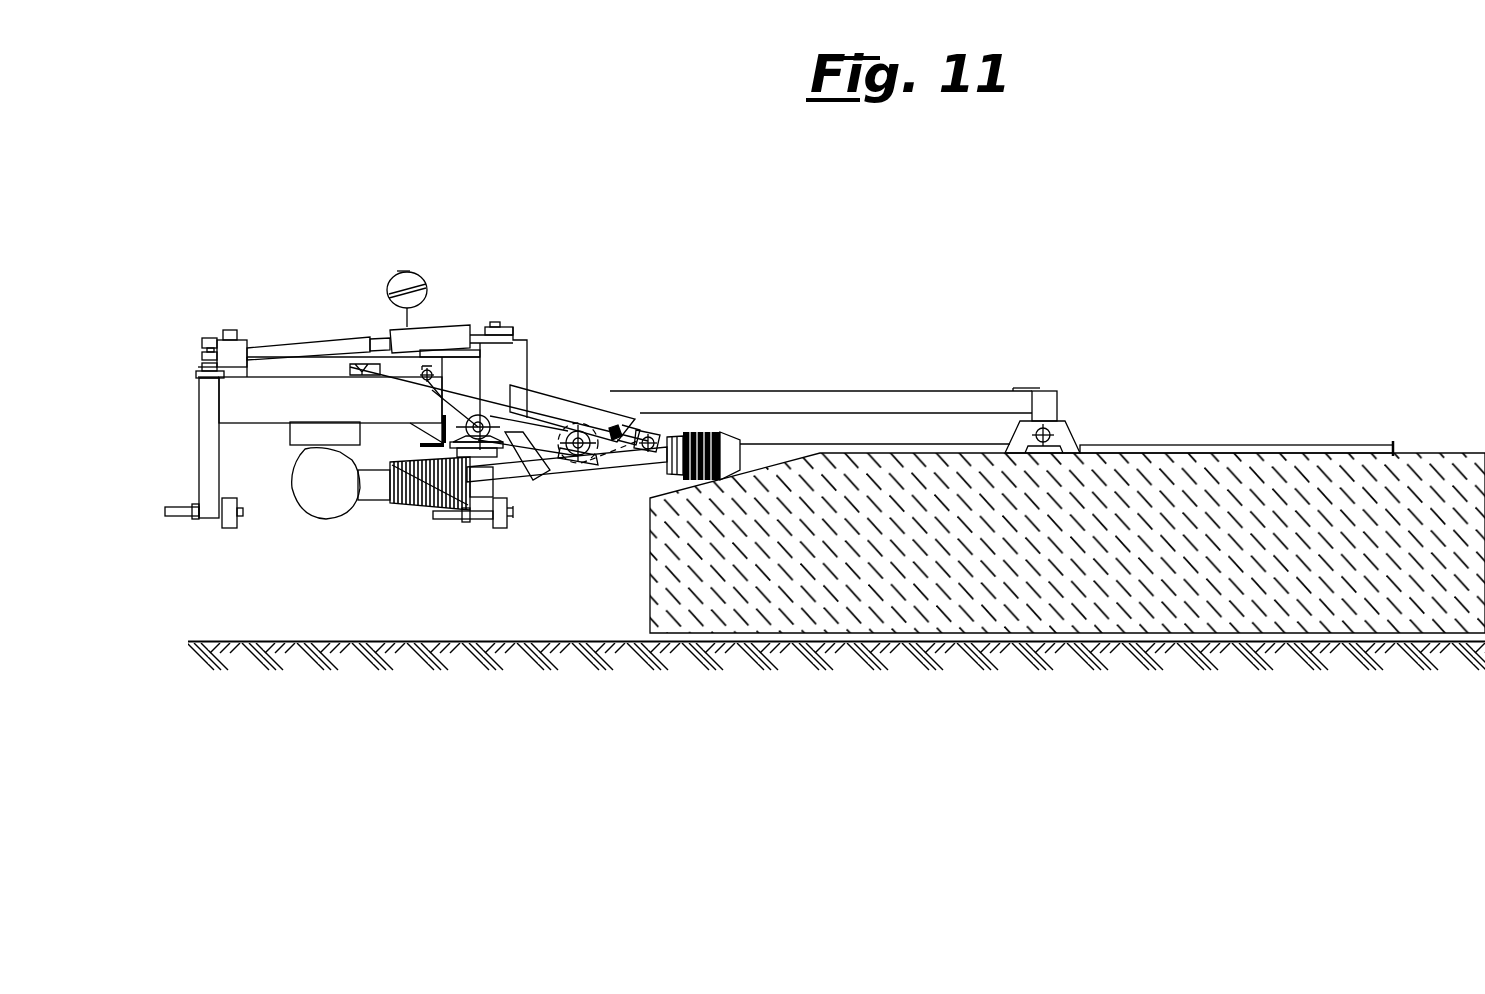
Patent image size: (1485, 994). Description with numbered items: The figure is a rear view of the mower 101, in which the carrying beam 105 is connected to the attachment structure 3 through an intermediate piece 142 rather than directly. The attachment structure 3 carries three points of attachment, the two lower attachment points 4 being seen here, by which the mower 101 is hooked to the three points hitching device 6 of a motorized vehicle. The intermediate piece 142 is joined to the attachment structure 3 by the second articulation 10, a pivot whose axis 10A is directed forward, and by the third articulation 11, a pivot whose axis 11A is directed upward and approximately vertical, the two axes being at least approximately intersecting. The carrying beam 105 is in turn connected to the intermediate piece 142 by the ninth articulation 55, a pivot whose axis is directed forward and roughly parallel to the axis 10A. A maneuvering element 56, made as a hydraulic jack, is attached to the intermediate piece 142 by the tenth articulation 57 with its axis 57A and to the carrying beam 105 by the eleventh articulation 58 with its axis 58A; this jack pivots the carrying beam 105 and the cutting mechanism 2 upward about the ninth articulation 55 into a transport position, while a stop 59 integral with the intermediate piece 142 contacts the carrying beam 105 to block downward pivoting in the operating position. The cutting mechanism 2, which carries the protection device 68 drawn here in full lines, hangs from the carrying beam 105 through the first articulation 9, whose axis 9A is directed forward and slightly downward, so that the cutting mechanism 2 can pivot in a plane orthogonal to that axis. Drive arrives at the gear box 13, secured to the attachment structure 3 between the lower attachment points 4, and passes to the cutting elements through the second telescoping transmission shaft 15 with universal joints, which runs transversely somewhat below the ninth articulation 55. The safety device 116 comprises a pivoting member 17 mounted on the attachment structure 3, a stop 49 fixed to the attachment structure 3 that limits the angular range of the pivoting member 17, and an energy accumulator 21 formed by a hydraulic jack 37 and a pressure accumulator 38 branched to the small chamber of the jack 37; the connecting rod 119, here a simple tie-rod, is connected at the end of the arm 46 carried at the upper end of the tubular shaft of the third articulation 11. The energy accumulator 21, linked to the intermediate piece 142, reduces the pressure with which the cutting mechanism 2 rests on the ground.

The safety device 116 is at (294, 270).
The attachment structure 3 is at (194, 422).
The three points hitching device 6 is at (229, 525).
The lower attachment points 4 is at (243, 515).
The pivoting member 17 is at (212, 342).
The stop 49 is at (203, 367).
The energy accumulator 21 is at (290, 350).
The connecting rod 119 is at (365, 360).
The pressure accumulator 38 is at (397, 275).
The hydraulic jack 37 is at (437, 340).
The arm 46 is at (487, 322).
The tenth articulation 57 is at (508, 380).
The axis of the tenth articulation 57A is at (424, 384).
The axis of the third articulation 11A is at (483, 392).
The second articulation 10 is at (537, 384).
The maneuvering element 56 is at (583, 417).
The intermediate piece 142 is at (658, 432).
The eleventh articulation 58 is at (657, 440).
The axis of the eleventh articulation 58A is at (673, 433).
The stop 59 is at (592, 458).
The ninth articulation 55 is at (582, 458).
The axis of the second articulation 10A is at (505, 470).
The third articulation 11 is at (400, 503).
The gear box 13 is at (332, 505).
The second telescoping transmission shaft 15 is at (486, 498).
The carrying beam 105 is at (955, 385).
The first articulation 9 is at (1050, 428).
The axis of the first articulation 9A is at (1052, 434).
The cutting mechanism 2 is at (1222, 447).
The protection device 68 is at (1457, 455).
The mower 101 is at (806, 290).